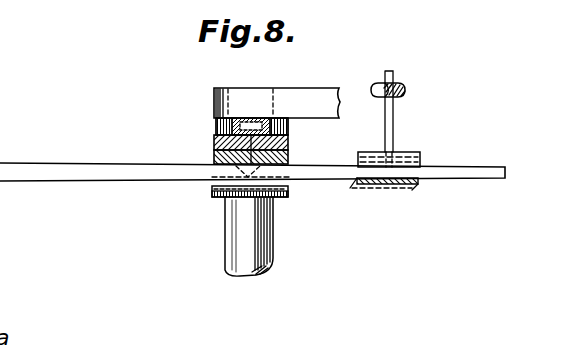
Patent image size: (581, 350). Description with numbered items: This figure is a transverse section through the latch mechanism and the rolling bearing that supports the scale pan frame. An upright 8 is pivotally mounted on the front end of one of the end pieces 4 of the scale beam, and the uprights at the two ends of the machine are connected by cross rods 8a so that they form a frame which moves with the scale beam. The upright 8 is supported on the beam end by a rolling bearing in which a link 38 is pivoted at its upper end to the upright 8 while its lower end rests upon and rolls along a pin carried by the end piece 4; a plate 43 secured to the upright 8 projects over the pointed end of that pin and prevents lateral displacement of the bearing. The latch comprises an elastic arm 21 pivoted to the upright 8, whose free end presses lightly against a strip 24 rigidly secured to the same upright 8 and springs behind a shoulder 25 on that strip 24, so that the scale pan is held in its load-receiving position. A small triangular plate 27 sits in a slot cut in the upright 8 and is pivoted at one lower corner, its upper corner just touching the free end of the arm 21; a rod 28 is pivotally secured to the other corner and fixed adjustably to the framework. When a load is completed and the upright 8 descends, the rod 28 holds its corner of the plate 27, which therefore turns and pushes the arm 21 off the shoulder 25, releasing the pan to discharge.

The end piece of scale beam 4 is at (310, 95).
The link 38 is at (217, 136).
The upright 8 is at (214, 158).
The strip 24 is at (137, 172).
The plate 43 is at (215, 189).
The cross rod 8a is at (273, 245).
The triangular plate 27 is at (393, 120).
The rod 28 is at (405, 89).
The shoulder 25 is at (358, 180).
The arm 21 is at (406, 183).